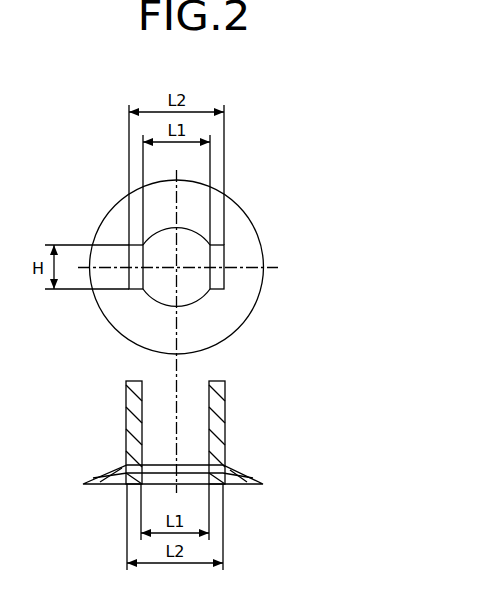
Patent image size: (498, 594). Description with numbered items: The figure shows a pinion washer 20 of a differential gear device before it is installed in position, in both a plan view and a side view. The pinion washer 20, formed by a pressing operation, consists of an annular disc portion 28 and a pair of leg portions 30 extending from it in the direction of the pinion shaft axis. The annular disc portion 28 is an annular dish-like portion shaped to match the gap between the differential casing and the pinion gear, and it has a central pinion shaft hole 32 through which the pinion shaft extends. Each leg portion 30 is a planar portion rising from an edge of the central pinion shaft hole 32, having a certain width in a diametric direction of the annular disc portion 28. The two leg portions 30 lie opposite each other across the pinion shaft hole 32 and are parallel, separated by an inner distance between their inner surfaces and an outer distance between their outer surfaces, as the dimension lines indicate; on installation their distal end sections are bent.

The pinion washer 20 is at (342, 264).
The annular disc portion 28 is at (233, 306).
The leg portions 30 is at (134, 258).
The central pinion shaft hole 32 is at (163, 297).